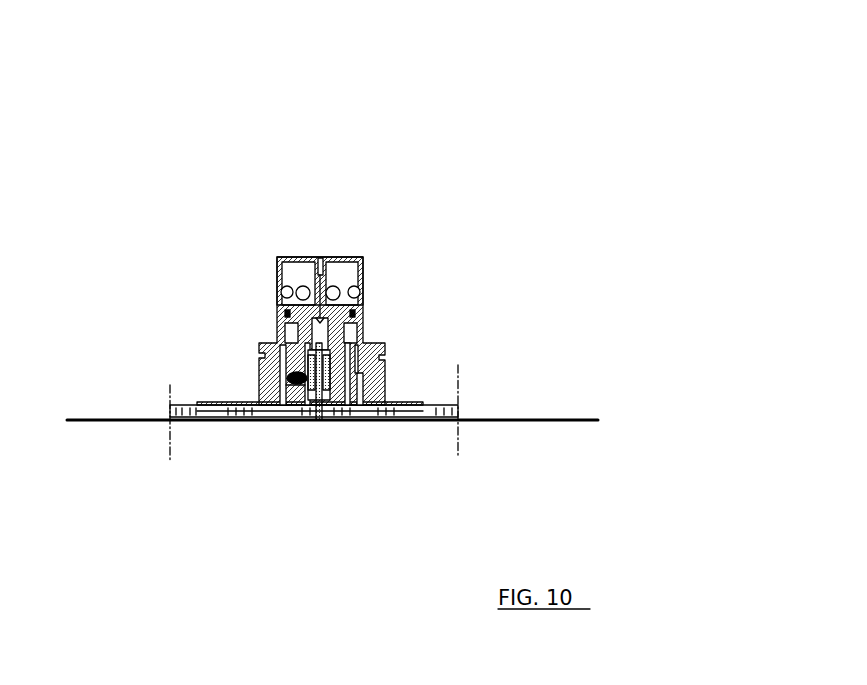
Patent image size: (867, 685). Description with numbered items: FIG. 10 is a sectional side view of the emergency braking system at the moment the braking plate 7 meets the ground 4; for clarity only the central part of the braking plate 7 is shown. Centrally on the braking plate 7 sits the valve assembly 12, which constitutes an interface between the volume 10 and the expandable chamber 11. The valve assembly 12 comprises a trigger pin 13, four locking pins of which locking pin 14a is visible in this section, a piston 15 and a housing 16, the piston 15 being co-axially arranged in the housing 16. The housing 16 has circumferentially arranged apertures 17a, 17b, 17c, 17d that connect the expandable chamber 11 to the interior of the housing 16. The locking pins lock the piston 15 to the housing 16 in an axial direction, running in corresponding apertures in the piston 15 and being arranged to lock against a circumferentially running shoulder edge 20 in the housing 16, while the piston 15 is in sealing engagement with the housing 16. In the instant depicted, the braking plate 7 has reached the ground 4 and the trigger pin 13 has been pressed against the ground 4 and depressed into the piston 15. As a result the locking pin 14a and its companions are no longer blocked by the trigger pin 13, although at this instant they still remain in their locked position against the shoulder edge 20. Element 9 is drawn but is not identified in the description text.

The ground 4 is at (92, 422).
The braking plate 7 is at (395, 404).
The plate layer 9 is at (276, 405).
The volume 10 is at (233, 424).
The expandable chamber 11 is at (353, 234).
The valve assembly 12 is at (409, 170).
The trigger pin 13 is at (322, 400).
The locking pin 14a is at (296, 385).
The piston 15 is at (345, 338).
The housing 16 is at (303, 258).
The aperture 17a is at (283, 295).
The aperture 17b is at (300, 288).
The aperture 17c is at (336, 288).
The aperture 17d is at (357, 290).
The shoulder edge 20 is at (279, 372).